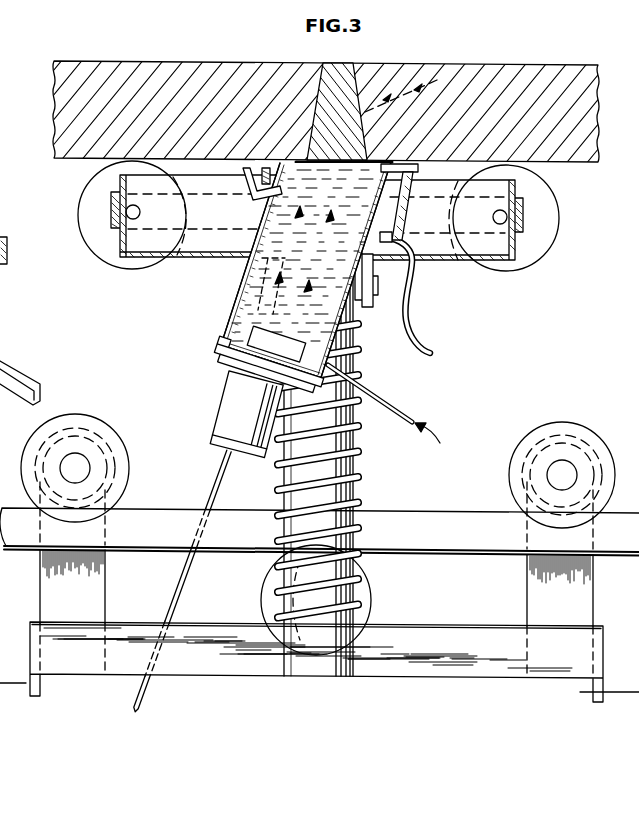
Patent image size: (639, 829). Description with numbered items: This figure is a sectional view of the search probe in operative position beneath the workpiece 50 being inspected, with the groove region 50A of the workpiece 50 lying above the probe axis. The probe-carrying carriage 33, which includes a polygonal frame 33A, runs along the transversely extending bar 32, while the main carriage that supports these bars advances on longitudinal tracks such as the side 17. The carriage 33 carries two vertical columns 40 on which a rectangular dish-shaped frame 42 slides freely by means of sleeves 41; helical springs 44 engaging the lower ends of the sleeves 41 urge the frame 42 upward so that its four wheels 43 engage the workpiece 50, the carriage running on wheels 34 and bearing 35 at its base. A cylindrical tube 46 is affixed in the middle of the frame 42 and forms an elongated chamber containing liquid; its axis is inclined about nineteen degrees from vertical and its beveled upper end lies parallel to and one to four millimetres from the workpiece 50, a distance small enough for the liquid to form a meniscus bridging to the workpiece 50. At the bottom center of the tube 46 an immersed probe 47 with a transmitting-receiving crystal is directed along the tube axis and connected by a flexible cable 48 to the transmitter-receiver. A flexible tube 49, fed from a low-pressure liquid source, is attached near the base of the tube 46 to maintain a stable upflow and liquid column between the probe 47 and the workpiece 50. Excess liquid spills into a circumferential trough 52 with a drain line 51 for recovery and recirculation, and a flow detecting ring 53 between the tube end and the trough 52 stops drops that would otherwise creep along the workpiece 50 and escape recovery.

The workpiece 50 is at (515, 75).
The weld groove 50A is at (338, 80).
The wheels 43 is at (546, 225).
The rectangular dish-shaped frame 42 is at (463, 262).
The flow detecting ring 53 is at (458, 184).
The trough 52 is at (407, 213).
The cylindrical tube 46 is at (237, 287).
The drain line 51 is at (416, 293).
The sleeves 41 is at (352, 306).
The immersed probe 47 is at (242, 388).
The flexible tube 49 is at (383, 402).
The flexible cable 48 is at (187, 582).
The vertical columns 40 is at (355, 465).
The helical springs 44 is at (355, 498).
The bearing 35 is at (370, 599).
The wheel 34 is at (117, 457).
The transversely extending bar 32 is at (490, 522).
The probe-carrying carriage 33 is at (415, 678).
The polygonal frame 33A is at (245, 663).
The side 17 is at (2, 352).